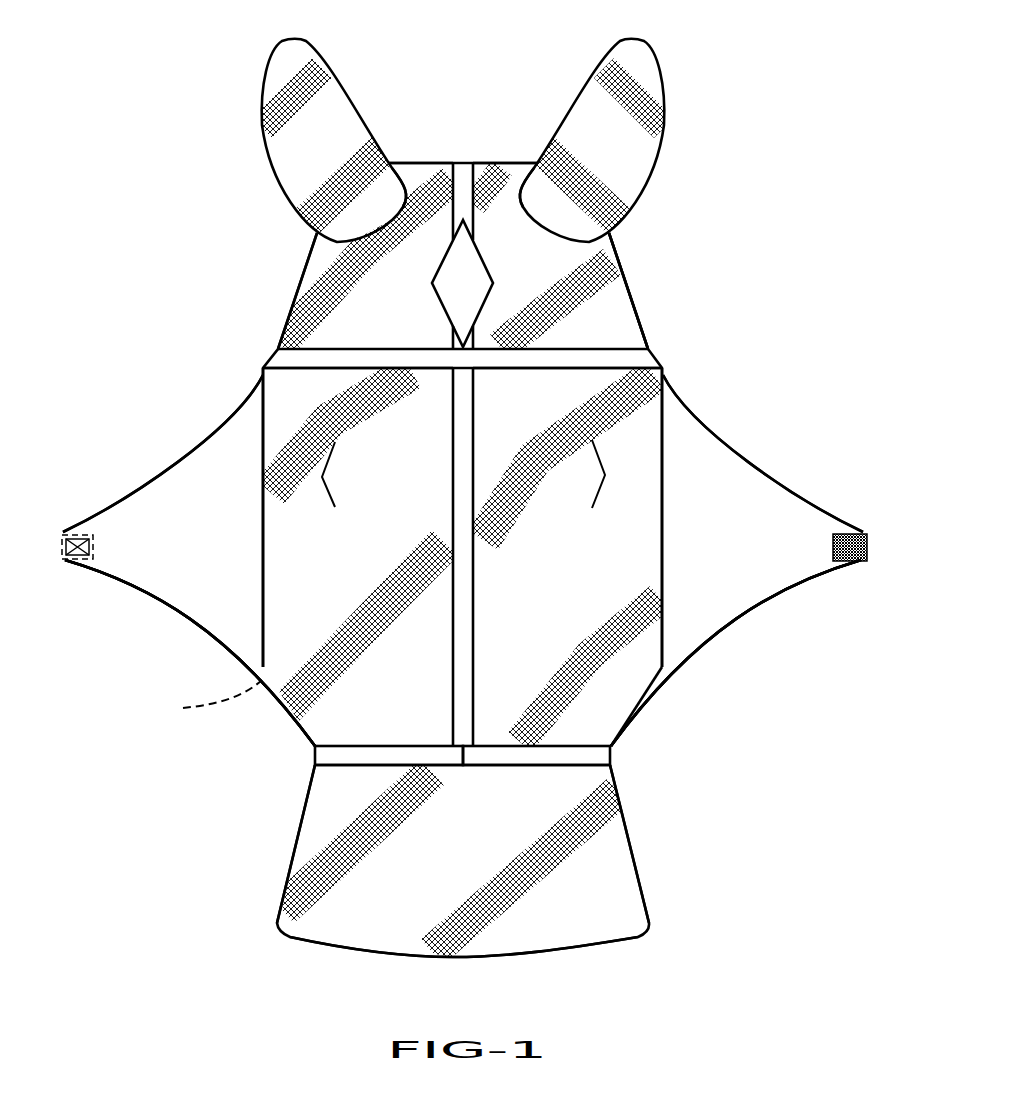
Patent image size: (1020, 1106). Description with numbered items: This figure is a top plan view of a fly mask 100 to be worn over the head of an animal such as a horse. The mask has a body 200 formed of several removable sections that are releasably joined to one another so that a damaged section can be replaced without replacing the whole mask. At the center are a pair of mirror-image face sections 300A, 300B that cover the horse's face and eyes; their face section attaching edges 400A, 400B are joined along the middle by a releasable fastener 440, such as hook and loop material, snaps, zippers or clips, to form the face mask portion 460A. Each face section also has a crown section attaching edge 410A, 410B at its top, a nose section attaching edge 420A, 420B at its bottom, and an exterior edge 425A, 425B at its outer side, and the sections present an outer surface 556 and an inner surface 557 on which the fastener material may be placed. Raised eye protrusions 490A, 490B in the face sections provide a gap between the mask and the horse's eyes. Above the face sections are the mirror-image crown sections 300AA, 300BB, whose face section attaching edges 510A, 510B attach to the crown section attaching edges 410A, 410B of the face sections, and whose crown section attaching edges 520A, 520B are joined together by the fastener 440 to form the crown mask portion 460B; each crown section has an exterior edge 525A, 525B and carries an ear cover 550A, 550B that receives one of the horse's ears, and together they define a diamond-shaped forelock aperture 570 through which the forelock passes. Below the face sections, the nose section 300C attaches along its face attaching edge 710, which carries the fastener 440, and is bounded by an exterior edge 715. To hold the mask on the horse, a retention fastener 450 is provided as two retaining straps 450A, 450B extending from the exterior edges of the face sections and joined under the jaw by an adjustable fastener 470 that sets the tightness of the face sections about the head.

The fly mask 100 is at (580, 560).
The body 200 is at (690, 393).
The face section 300A is at (303, 513).
The face section 300B is at (627, 435).
The crown section 300AA is at (397, 283).
The crown section 300BB is at (527, 298).
The nose section 300C is at (587, 918).
The face section attaching edge 400A is at (457, 622).
The face section attaching edge 400B is at (473, 567).
The crown section attaching edge 410A is at (330, 367).
The crown section attaching edge 410B is at (573, 367).
The nose section attaching edge 420A is at (375, 745).
The nose section attaching edge 420B is at (567, 747).
The exterior edge 425A is at (100, 512).
The exterior edge 425B is at (825, 508).
The releasable fastener 440 is at (463, 173).
The fastener 450 is at (186, 580).
The retaining strap 450A is at (138, 555).
The retaining strap 450B is at (787, 555).
The face mask portion 460A is at (660, 708).
The crown mask portion 460B is at (625, 232).
The fastener 470 is at (58, 537).
The eye protrusion 490A is at (333, 500).
The eye protrusion 490B is at (597, 493).
The face section attaching edge 510A is at (347, 348).
The face section attaching edge 510B is at (580, 348).
The crown section attaching edge 520A is at (443, 177).
The crown section attaching edge 520B is at (475, 220).
The exterior edge 525A is at (395, 157).
The exterior edge 525B is at (528, 163).
The ear cover 550A is at (310, 153).
The ear cover 550B is at (617, 153).
The outer surface 556 is at (510, 247).
The inner surface 557 is at (193, 701).
The forelock aperture 570 is at (407, 233).
The face attaching edge 710 is at (490, 767).
The exterior edge 715 is at (283, 873).